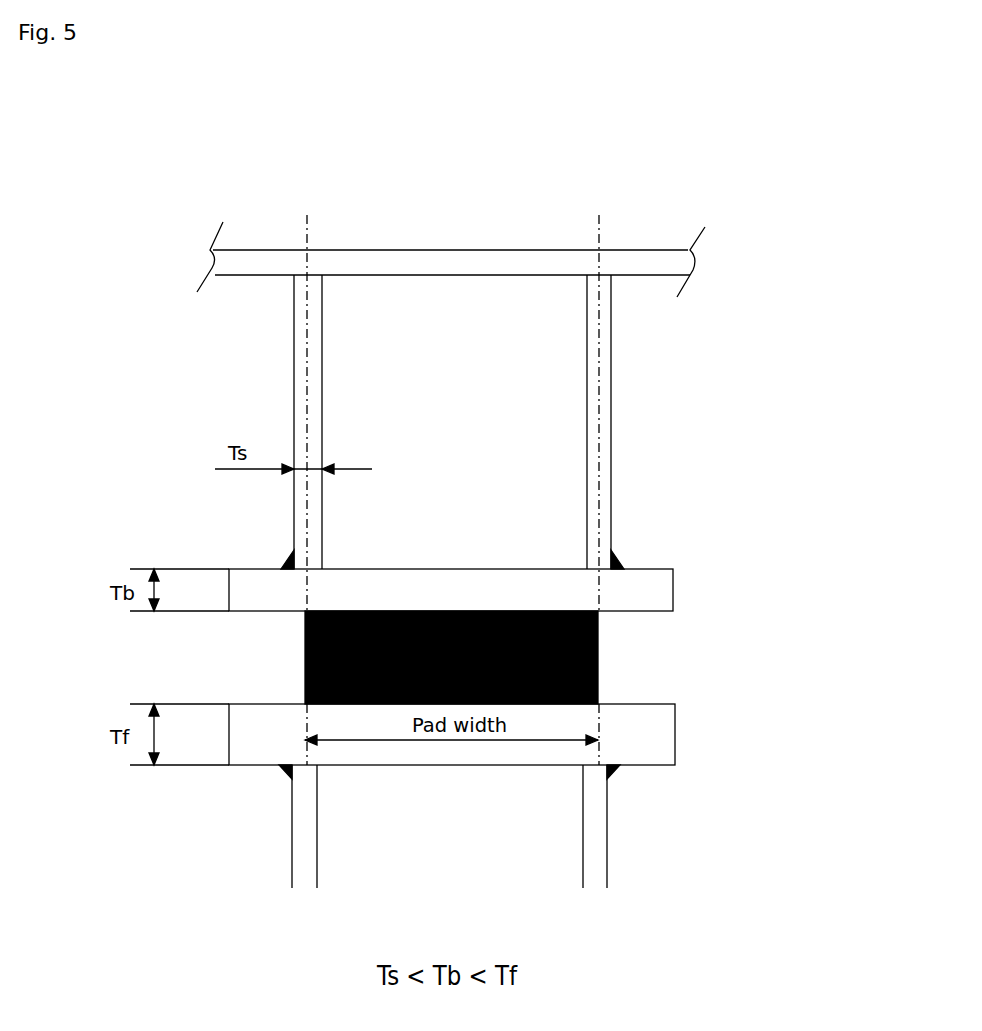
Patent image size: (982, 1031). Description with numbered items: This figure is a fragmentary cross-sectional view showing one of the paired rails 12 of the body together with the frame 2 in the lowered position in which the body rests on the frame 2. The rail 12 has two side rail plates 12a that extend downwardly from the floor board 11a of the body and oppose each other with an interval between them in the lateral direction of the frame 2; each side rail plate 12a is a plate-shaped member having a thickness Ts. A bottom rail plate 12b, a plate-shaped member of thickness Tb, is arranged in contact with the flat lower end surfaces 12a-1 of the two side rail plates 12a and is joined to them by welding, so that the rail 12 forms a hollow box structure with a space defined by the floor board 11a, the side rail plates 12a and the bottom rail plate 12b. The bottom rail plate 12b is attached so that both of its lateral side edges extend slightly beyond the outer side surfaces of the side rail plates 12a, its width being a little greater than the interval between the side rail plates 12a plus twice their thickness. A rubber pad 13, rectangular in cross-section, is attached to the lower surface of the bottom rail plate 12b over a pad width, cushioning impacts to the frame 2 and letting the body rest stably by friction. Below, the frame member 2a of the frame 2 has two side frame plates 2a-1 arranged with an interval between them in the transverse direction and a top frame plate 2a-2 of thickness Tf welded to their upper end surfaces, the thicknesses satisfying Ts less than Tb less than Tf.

The floor board 11a is at (457, 258).
The rail 12 is at (549, 443).
The side rail plate 12a is at (307, 445).
The lower end surface 12a-1 is at (309, 567).
The bottom rail plate 12b is at (503, 539).
The rubber pad 13 is at (598, 647).
The frame 2 is at (540, 833).
The frame member 2a is at (539, 833).
The side frame plate 2a-1 is at (308, 869).
The top frame plate 2a-2 is at (657, 752).